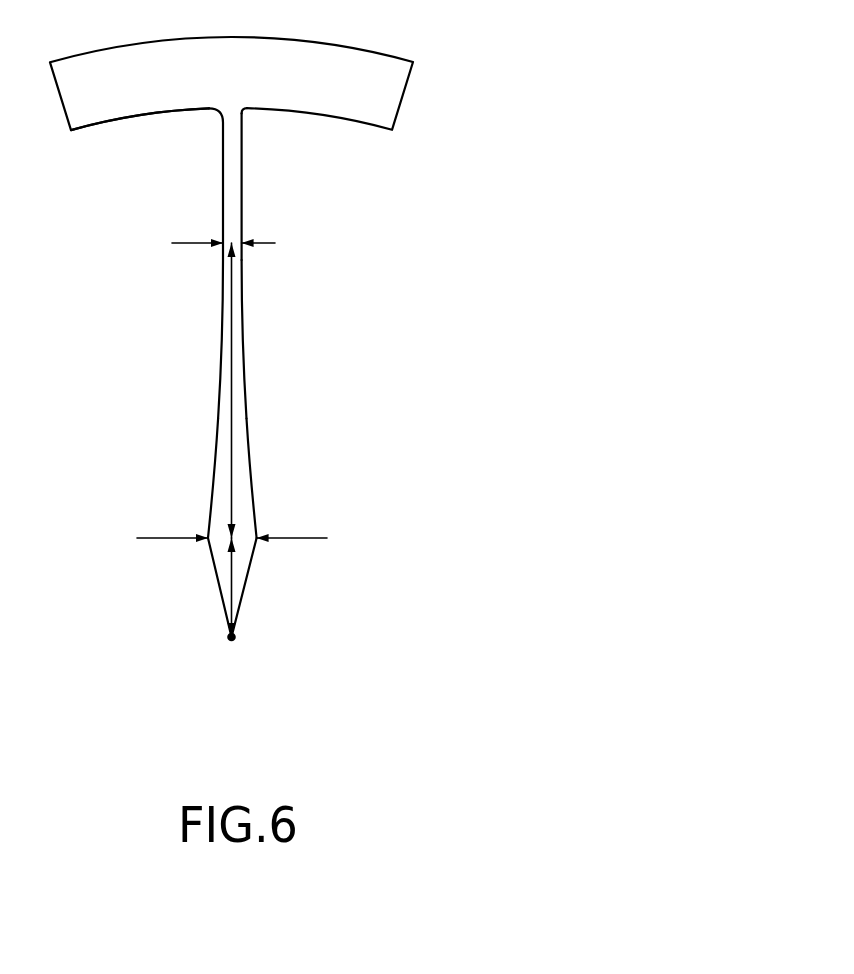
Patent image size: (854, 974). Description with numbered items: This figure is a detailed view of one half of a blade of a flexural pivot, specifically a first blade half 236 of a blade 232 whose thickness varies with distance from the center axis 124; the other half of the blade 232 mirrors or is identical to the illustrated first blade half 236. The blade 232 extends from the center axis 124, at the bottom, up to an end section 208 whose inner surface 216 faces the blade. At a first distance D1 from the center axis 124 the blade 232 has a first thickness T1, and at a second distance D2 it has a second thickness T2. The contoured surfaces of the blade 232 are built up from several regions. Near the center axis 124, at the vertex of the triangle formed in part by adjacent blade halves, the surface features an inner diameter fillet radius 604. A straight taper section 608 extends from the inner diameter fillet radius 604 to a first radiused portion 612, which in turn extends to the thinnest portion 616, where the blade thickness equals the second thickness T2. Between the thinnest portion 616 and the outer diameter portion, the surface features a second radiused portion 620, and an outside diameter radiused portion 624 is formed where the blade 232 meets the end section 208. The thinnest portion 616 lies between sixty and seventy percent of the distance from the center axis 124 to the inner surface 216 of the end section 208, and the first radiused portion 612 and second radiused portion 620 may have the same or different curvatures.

The end section 208 is at (388, 72).
The inner surface 216 is at (110, 121).
The outside diameter radiused portion 624 is at (250, 110).
The second radiused portion 620 is at (243, 178).
The thinnest portion 616 is at (223, 240).
The first blade half 236 is at (228, 343).
The blade 232 is at (218, 432).
The first radiused portion 612 is at (243, 402).
The straight taper section 608 is at (248, 488).
The inner diameter fillet radius 604 is at (208, 535).
The center axis 124 is at (232, 640).
The second thickness T2 is at (275, 244).
The second distance D2 is at (233, 311).
The first thickness T1 is at (327, 538).
The first distance D1 is at (232, 587).